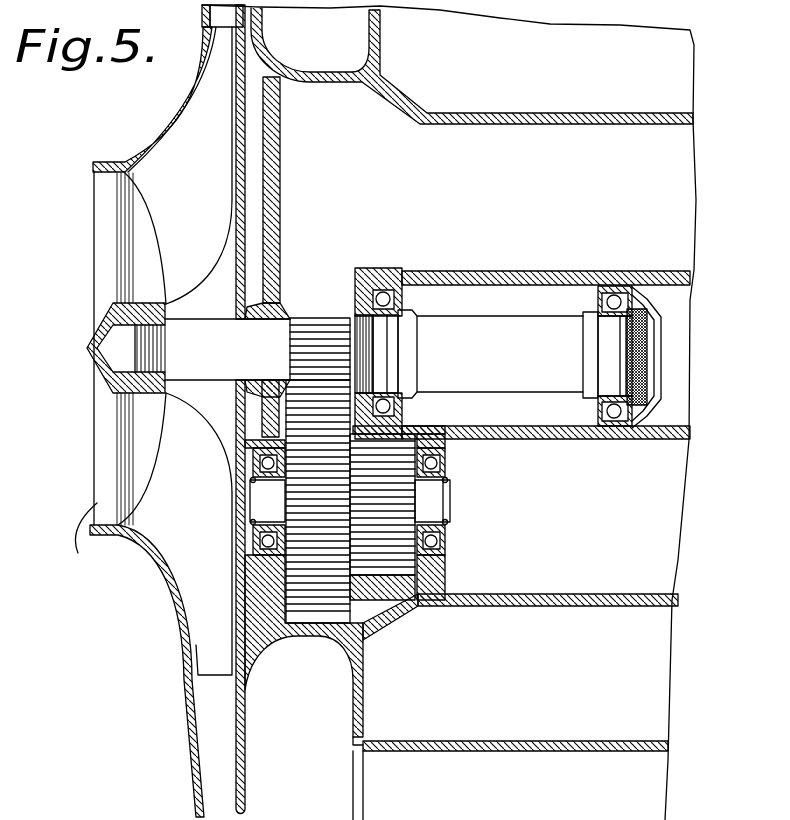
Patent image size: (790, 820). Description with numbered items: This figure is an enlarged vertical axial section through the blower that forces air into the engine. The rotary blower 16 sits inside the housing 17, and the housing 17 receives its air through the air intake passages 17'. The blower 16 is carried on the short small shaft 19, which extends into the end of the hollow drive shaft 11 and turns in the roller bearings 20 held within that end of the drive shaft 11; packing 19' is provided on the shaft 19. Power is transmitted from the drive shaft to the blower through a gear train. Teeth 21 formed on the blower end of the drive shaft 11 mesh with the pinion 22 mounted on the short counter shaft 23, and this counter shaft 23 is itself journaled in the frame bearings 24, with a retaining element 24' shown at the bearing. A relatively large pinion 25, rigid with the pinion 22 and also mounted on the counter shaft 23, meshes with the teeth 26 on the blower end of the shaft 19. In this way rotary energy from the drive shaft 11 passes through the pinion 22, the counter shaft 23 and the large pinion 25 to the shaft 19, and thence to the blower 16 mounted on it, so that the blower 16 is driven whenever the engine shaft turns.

The hollow drive shaft 11 is at (535, 276).
The rotary blower 16 is at (167, 158).
The housing 17 is at (147, 671).
The air intake passages 17' is at (88, 537).
The short small shaft 19 is at (413, 357).
The packing 19' is at (318, 335).
The roller bearings 20 is at (400, 299).
The teeth 21 is at (364, 272).
The pinion 22 is at (416, 499).
The short counter shaft 23 is at (444, 514).
The frame bearings 24 is at (347, 507).
The retaining ring 24' is at (479, 534).
The relatively large pinion 25 is at (312, 627).
The teeth 26 is at (312, 317).